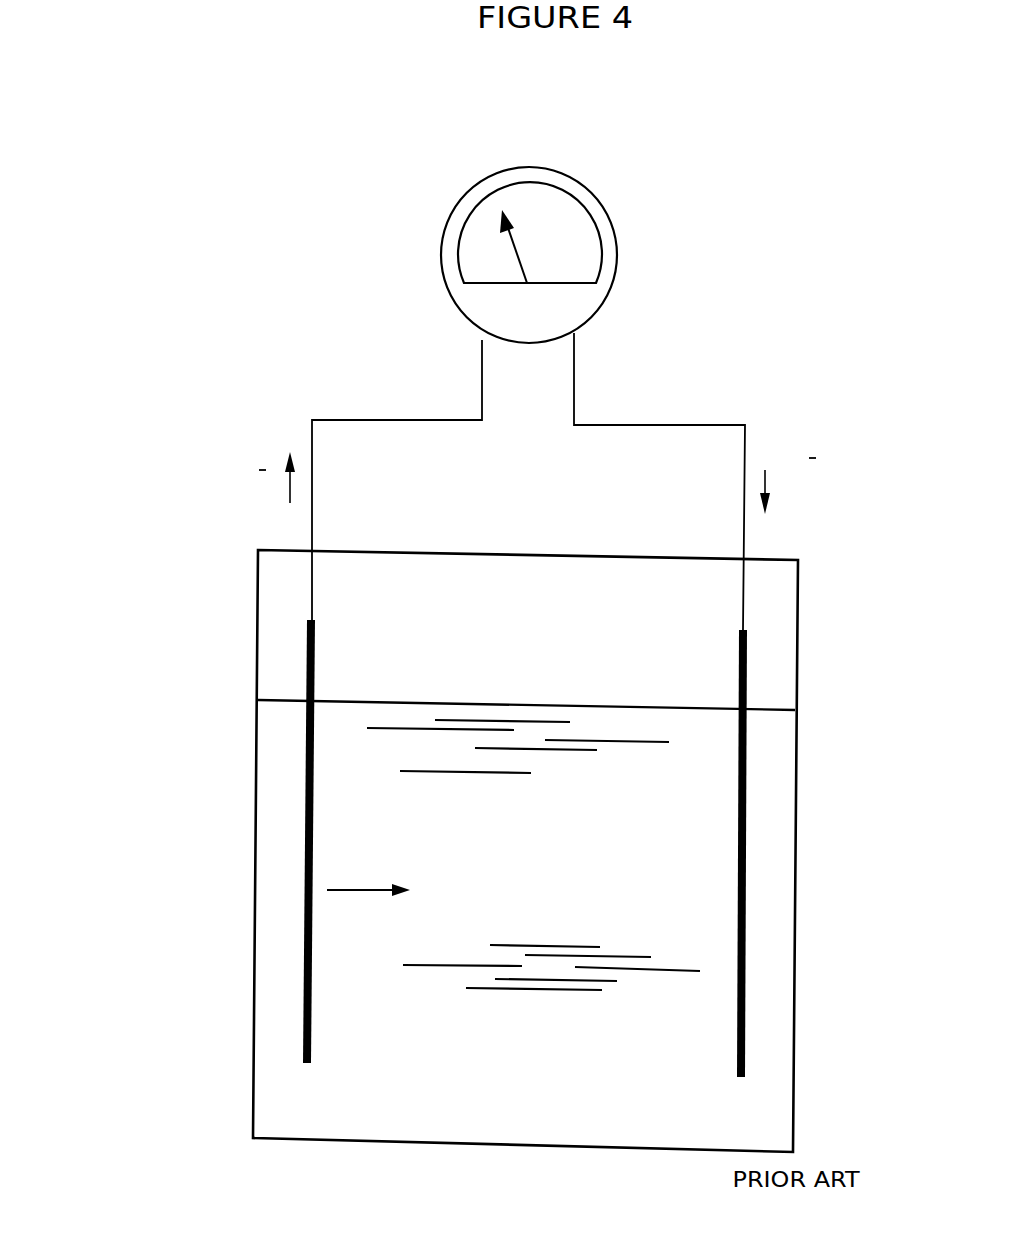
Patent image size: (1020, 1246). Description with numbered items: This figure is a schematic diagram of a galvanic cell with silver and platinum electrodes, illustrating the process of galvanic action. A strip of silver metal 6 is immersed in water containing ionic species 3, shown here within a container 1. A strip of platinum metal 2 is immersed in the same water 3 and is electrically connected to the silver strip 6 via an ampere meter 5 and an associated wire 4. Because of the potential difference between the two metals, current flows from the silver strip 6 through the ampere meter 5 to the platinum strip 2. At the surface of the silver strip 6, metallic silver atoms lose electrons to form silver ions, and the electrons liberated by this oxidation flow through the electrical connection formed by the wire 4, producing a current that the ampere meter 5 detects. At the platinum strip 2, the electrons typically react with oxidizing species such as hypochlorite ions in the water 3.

The electrolytic cell container 1 is at (258, 850).
The cathode 2 is at (747, 855).
The water containing ionic species 3 is at (565, 1018).
The wire 4 is at (578, 400).
The ampere meter 5 is at (438, 260).
The silver strip 6 is at (300, 940).